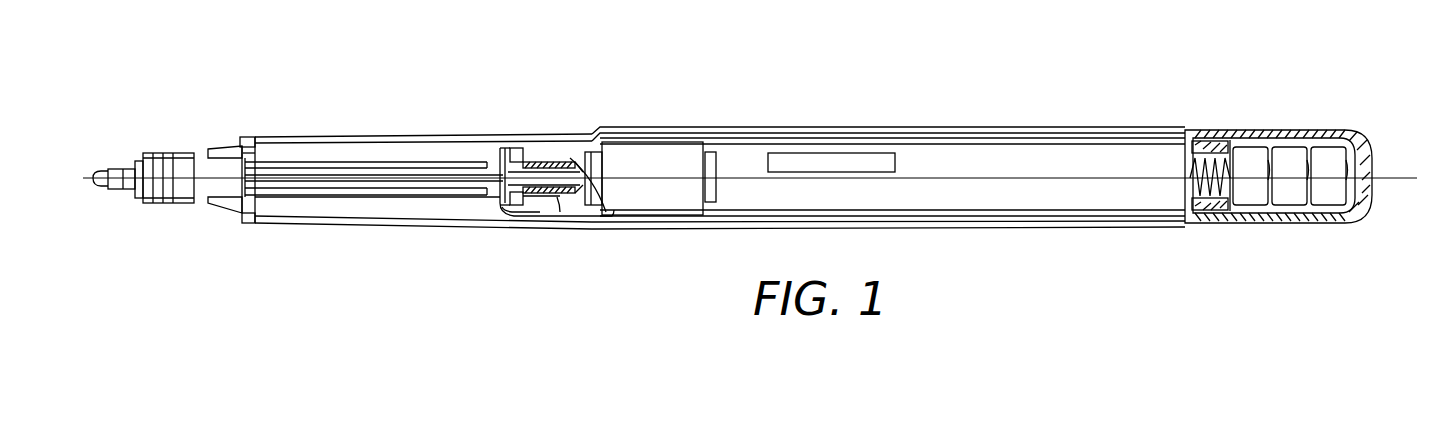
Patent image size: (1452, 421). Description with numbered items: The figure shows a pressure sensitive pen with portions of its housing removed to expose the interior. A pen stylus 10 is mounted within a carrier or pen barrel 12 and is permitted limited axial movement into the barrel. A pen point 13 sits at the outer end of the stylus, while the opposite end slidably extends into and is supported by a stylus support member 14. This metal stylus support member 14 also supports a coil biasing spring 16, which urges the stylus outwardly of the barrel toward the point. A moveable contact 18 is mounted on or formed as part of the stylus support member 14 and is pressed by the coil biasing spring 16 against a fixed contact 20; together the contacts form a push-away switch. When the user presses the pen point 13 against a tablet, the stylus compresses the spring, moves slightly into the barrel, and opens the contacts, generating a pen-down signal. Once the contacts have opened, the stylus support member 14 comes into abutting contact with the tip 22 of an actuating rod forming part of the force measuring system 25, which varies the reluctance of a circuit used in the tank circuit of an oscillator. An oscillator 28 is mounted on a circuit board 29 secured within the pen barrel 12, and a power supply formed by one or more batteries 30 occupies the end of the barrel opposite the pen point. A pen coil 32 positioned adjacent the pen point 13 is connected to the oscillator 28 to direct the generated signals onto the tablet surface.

The pen stylus 10 is at (392, 178).
The pen barrel 12 is at (257, 138).
The pen point 13 is at (106, 188).
The stylus support member 14 is at (568, 163).
The coil biasing spring 16 is at (566, 197).
The moveable contact 18 is at (541, 198).
The fixed contact 20 is at (500, 168).
The tip of actuating rod 22 is at (604, 213).
The force measuring system 25 is at (660, 150).
The oscillator 28 is at (865, 157).
The circuit board 29 is at (925, 157).
The batteries 30 is at (1248, 198).
The pen coil 32 is at (160, 151).